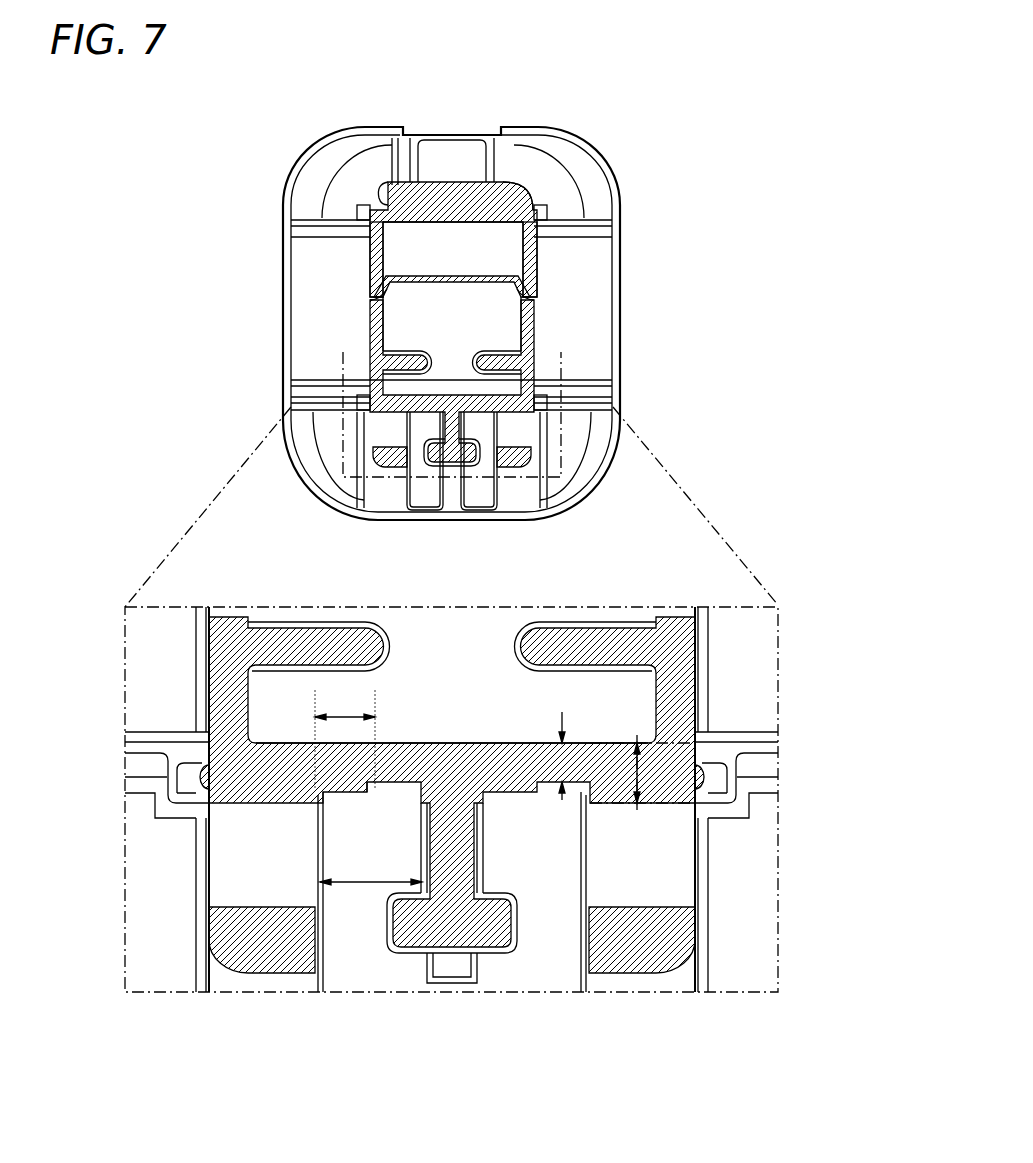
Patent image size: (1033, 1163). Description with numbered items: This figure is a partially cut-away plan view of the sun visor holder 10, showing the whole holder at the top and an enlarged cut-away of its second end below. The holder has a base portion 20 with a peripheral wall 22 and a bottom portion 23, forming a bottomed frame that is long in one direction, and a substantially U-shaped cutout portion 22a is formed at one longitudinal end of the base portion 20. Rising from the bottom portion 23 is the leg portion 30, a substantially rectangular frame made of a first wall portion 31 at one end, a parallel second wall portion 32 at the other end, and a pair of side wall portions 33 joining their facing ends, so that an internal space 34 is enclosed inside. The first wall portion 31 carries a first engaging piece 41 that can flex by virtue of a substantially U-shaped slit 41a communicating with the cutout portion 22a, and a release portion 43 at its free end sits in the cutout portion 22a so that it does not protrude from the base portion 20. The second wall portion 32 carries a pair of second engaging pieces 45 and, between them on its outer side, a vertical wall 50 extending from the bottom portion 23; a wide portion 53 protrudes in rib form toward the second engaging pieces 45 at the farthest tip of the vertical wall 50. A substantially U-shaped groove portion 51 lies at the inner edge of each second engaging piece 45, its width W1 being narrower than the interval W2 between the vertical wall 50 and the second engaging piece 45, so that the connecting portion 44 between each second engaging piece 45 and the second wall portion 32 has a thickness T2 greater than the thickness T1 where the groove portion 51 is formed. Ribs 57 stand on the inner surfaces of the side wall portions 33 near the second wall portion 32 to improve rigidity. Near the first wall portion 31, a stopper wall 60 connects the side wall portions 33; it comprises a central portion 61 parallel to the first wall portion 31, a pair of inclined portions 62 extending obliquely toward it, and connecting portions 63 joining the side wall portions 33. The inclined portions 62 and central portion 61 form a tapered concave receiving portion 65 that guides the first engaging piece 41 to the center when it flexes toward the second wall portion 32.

The sun visor holder 10 is at (300, 124).
The base portion 20 is at (635, 168).
The peripheral wall 22 is at (284, 450).
The cutout portion 22a is at (498, 133).
The bottom portion 23 is at (333, 453).
The leg portion 30 is at (558, 190).
The first wall portion 31 is at (385, 195).
The second wall portion 32 is at (503, 400).
The side wall portions 33 is at (370, 222).
The internal space 34 is at (452, 697).
The first engaging piece 41 is at (430, 190).
The slit 41a is at (552, 188).
The release portion 43 is at (458, 160).
The connecting portion 44 is at (745, 803).
The second engaging pieces 45 is at (392, 480).
The vertical wall 50 is at (478, 452).
The groove portion 51 is at (352, 784).
The wide portion 53 is at (437, 457).
The ribs 57 is at (300, 376).
The stopper wall 60 is at (418, 254).
The central portion 61 is at (455, 288).
The inclined portions 62 is at (385, 292).
The connecting portions 63 is at (375, 250).
The concave receiving portion 65 is at (467, 266).
The width of the groove portion W1 is at (345, 740).
The interval between the vertical wall and the second engaging piece W2 is at (371, 869).
The thickness of the groove-formed portion T1 is at (562, 808).
The thickness of the connecting portion T2 is at (640, 780).